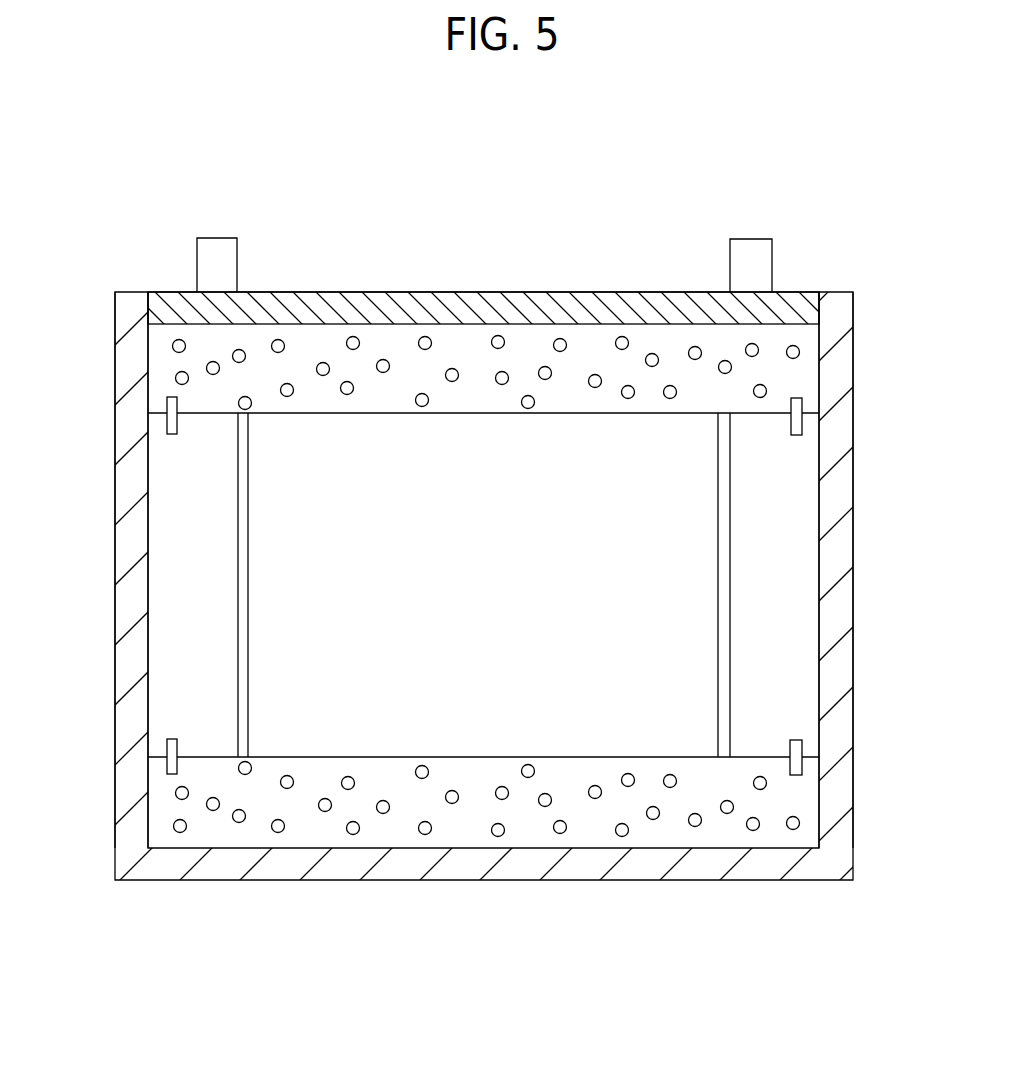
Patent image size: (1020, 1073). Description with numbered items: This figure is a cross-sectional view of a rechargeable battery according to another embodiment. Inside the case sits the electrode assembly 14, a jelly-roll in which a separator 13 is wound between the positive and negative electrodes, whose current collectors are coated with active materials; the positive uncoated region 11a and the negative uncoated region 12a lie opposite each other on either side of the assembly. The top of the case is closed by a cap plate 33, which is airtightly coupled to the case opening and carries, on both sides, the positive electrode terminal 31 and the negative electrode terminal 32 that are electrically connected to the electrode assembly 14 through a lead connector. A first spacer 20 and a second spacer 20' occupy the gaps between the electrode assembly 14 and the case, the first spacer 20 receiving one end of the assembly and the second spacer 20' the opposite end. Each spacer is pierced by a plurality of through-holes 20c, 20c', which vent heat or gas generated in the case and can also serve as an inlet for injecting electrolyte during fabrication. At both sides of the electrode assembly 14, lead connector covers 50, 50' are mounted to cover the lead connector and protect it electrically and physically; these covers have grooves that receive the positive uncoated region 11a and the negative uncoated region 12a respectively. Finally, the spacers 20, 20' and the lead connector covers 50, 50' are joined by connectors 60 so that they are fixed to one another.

The separator 13 is at (510, 536).
The electrode assembly 14 is at (423, 703).
The first spacer 20 is at (486, 311).
The through-holes 20c is at (486, 311).
The second spacer 20' is at (487, 863).
The through-holes 20c' is at (487, 863).
The positive electrode terminal 31 is at (216, 246).
The negative electrode terminal 32 is at (750, 246).
The cap plate 33 is at (593, 312).
The positive uncoated region 11a is at (240, 607).
The negative uncoated region 12a is at (730, 607).
The lead connector cover 50 is at (97, 570).
The lead connector cover 50' is at (863, 570).
The connectors 60 is at (166, 402).